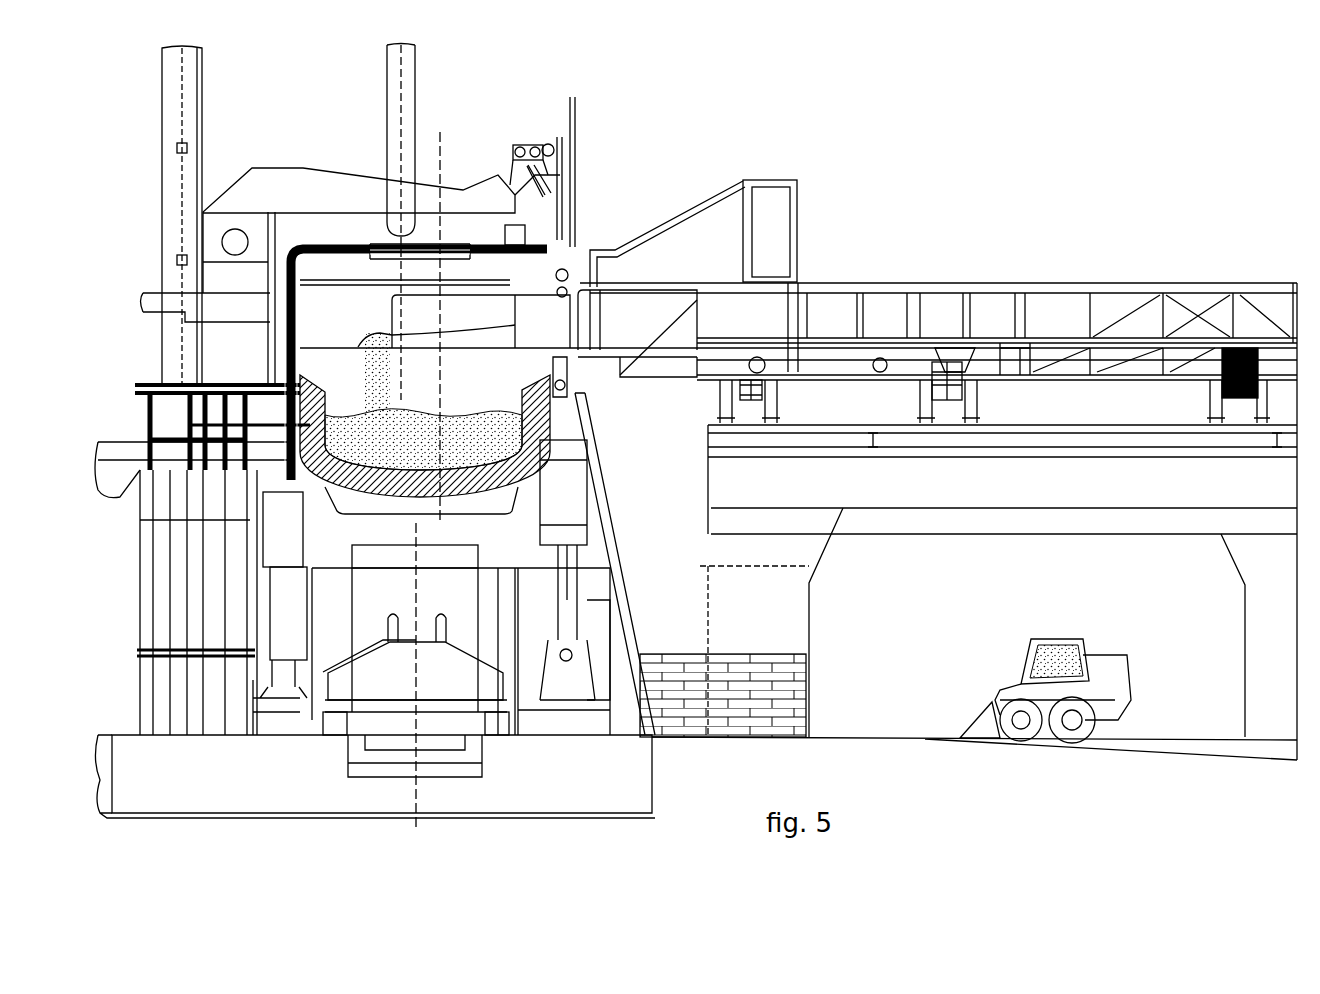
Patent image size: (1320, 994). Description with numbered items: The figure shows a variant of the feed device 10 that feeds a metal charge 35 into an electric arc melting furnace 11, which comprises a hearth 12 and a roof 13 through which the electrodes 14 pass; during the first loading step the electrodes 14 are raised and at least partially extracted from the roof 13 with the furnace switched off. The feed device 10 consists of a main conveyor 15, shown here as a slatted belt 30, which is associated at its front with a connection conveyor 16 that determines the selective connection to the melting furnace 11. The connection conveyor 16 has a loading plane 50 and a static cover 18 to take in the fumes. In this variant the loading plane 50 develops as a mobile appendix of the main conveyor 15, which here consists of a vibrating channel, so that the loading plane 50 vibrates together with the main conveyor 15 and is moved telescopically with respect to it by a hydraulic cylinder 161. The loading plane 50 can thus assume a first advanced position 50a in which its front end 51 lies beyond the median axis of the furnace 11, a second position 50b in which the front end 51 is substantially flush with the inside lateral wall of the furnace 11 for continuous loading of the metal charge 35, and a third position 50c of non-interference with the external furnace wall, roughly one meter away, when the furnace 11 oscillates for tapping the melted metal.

The feed device 10 is at (612, 224).
The electric arc melting furnace 11 is at (240, 348).
The hearth 12 is at (578, 500).
The roof 13 is at (358, 233).
The electrodes 14 is at (407, 89).
The main conveyor 15 is at (872, 252).
The connection conveyor 16 is at (500, 280).
The static cover to take in the fumes 18 is at (758, 180).
The slatted belt 30 is at (1003, 340).
The metal charge 35 is at (572, 432).
The loading plane 50 is at (498, 356).
The first advanced position 50a is at (390, 325).
The second position 50b is at (412, 345).
The third position 50c is at (598, 324).
The front end 51 is at (502, 316).
The hydraulic cylinder 161 is at (1072, 376).